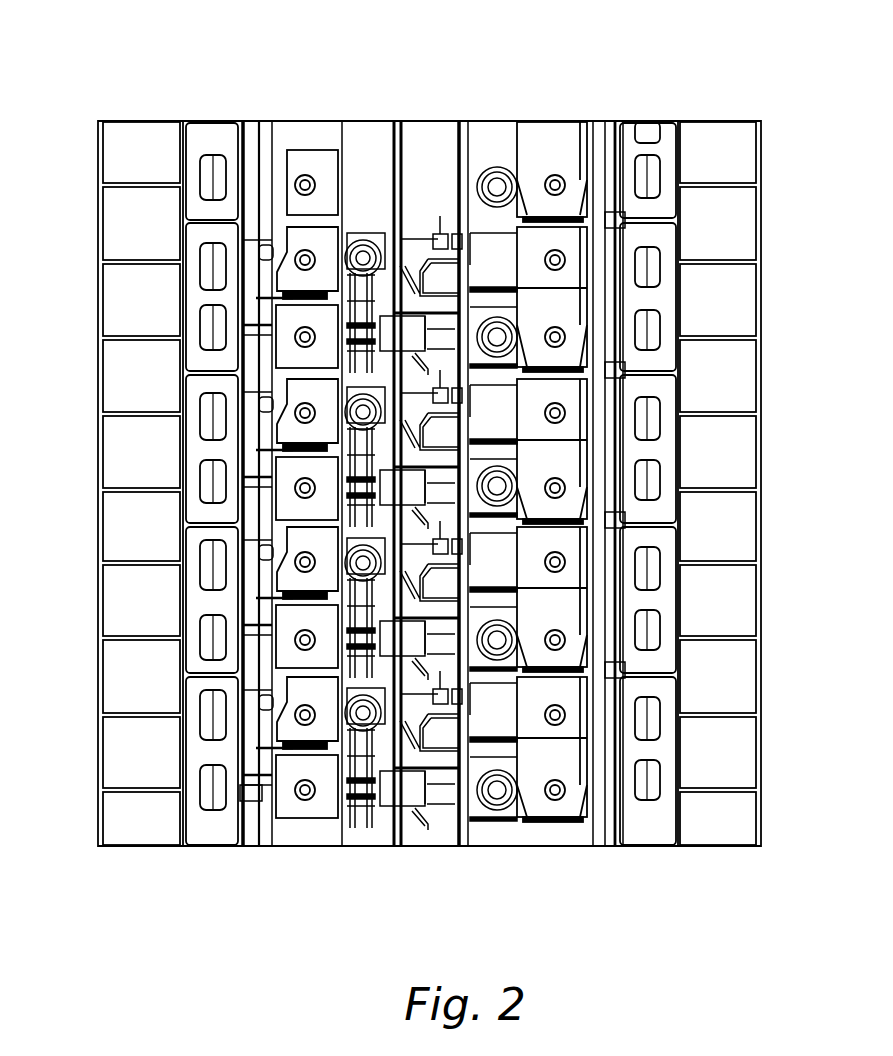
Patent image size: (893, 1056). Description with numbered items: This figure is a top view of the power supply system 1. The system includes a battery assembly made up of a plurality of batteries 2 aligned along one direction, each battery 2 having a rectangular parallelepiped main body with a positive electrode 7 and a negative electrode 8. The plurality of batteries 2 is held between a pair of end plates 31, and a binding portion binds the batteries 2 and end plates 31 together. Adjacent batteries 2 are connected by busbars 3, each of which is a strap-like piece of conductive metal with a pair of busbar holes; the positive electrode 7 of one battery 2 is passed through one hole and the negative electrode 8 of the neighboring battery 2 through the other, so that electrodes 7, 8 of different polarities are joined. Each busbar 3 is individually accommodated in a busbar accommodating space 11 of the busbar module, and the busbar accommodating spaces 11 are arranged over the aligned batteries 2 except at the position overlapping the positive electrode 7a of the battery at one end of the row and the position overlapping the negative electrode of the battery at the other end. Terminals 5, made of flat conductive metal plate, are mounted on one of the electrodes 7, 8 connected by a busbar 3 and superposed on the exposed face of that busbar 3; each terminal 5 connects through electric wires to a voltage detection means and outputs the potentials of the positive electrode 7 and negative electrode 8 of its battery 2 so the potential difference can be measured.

The power supply system 1 is at (708, 85).
The battery 2 is at (769, 600).
The busbar 3 is at (290, 242).
The terminal 5 is at (287, 185).
The positive electrode 7 is at (244, 184).
The positive electrode 7a is at (243, 793).
The negative electrode 8 is at (293, 262).
The busbar accommodating space 11 is at (535, 153).
The end plate 31 is at (740, 818).